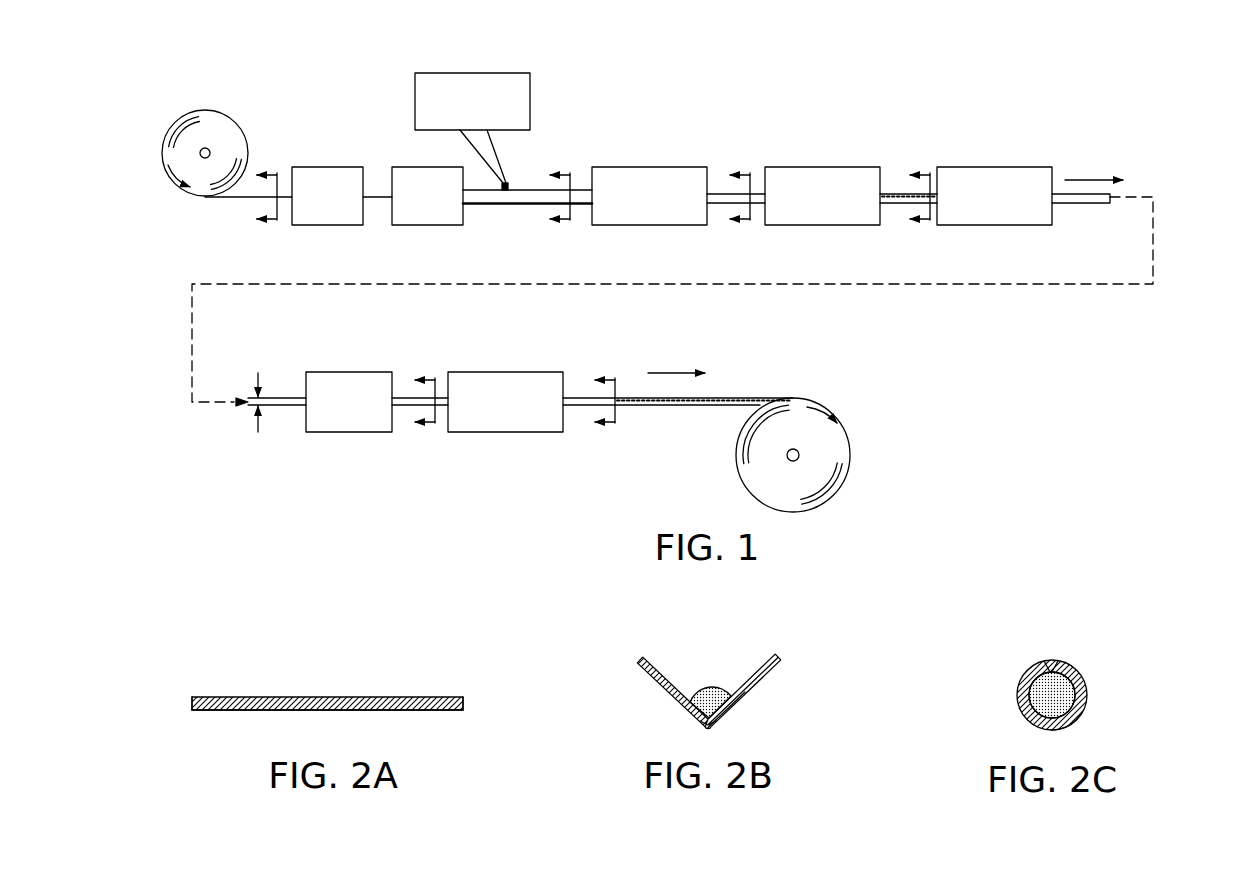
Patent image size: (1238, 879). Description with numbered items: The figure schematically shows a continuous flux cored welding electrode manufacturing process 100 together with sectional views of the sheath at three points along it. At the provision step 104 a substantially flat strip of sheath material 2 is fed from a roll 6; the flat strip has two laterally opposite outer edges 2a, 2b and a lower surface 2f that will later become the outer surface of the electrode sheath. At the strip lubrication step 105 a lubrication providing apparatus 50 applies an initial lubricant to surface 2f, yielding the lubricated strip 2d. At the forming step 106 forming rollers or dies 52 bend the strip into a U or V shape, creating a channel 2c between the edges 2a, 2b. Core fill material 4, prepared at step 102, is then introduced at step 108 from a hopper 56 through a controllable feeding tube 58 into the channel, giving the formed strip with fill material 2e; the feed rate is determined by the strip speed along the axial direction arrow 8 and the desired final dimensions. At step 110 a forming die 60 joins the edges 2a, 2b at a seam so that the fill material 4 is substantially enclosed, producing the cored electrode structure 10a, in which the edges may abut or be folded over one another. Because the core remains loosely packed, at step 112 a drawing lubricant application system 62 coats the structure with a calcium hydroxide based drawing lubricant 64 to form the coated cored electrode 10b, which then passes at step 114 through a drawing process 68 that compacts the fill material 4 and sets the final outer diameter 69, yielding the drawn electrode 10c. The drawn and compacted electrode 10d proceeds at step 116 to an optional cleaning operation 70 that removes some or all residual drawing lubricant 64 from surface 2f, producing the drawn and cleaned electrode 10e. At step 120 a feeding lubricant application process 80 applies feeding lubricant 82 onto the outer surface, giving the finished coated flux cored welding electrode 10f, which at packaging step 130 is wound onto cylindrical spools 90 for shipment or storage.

In FIG. 1, the flux cored welding electrode manufacturing process 100 is at (1103, 77).
In FIG. 1, the core fill material preparation step 102 is at (552, 80).
In FIG. 1, the flat strip provision step 104 is at (235, 102).
In FIG. 1, the strip lubrication step 105 is at (325, 158).
In FIG. 1, the strip forming step 106 is at (410, 158).
In FIG. 1, the fill material introduction step 108 is at (545, 150).
In FIG. 1, the edge joining step 110 is at (667, 158).
In FIG. 1, the drawing lubricant application step 112 is at (838, 158).
In FIG. 1, the drawing step 114 is at (1008, 158).
In FIG. 1, the cleaning step 116 is at (365, 357).
In FIG. 1, the feeding lubricant application step 120 is at (523, 357).
In FIG. 1, the packaging step 130 is at (852, 407).
In FIG. 1, the roll 6 is at (199, 110).
In FIG. 1, the sheath material strip 2 is at (250, 198).
In FIG. 2A, the sheath material strip 2 is at (277, 697).
In FIG. 2A, the first outer edge 2a is at (192, 699).
In FIG. 2B, the first outer edge 2a is at (637, 656).
In FIG. 2C, the first outer edge 2a is at (1060, 672).
In FIG. 2A, the second outer edge 2b is at (463, 700).
In FIG. 2B, the second outer edge 2b is at (781, 654).
In FIG. 2C, the second outer edge 2b is at (1042, 665).
In FIG. 2B, the channel 2c is at (680, 665).
In FIG. 1, the lubricated strip 2d is at (377, 198).
In FIG. 1, the formed strip with fill material 2e is at (527, 204).
In FIG. 2B, the formed strip with fill material 2e is at (818, 678).
In FIG. 1, the lower edge or surface 2f is at (508, 199).
In FIG. 2A, the lower edge or surface 2f is at (337, 710).
In FIG. 2B, the lower edge or surface 2f is at (750, 700).
In FIG. 2C, the lower edge or surface 2f is at (1083, 713).
In FIG. 1, the core fill material 4 is at (508, 183).
In FIG. 2B, the core fill material 4 is at (717, 680).
In FIG. 2C, the core fill material 4 is at (1027, 715).
In FIG. 1, the lubrication providing apparatus 50 is at (342, 228).
In FIG. 1, the forming rollers or dies 52 is at (442, 228).
In FIG. 1, the hopper 56 is at (413, 95).
In FIG. 1, the feeding tube 58 is at (473, 146).
In FIG. 1, the forming die 60 is at (687, 228).
In FIG. 1, the drawing lubricant application system 62 is at (860, 228).
In FIG. 1, the drawing lubricant 64 is at (897, 198).
In FIG. 1, the drawing process 68 is at (1030, 227).
In FIG. 1, the final outer diameter 69 is at (257, 425).
In FIG. 1, the cleaning operation 70 is at (370, 433).
In FIG. 1, the feeding lubricant application process 80 is at (542, 433).
In FIG. 1, the feeding lubricant 82 is at (578, 407).
In FIG. 1, the axial direction arrow 8 is at (1087, 177).
In FIG. 1, the cored electrode structure 10a is at (722, 204).
In FIG. 2C, the cored electrode structure 10a is at (1123, 648).
In FIG. 1, the coated cored electrode 10b is at (893, 204).
In FIG. 1, the drawn electrode 10c is at (1080, 204).
In FIG. 1, the drawn and compacted electrode 10d is at (277, 408).
In FIG. 1, the drawn and cleaned cored electrode structure 10e is at (407, 408).
In FIG. 1, the finished coated flux cored welding electrode 10f is at (680, 408).
In FIG. 1, the spool 90 is at (742, 478).